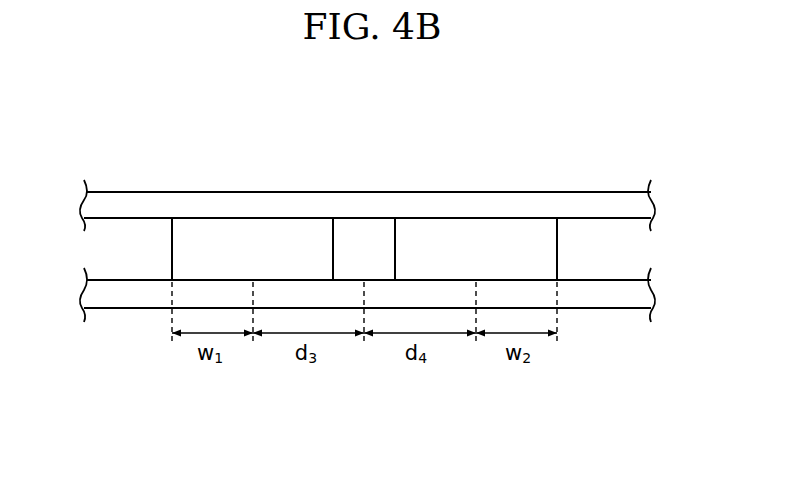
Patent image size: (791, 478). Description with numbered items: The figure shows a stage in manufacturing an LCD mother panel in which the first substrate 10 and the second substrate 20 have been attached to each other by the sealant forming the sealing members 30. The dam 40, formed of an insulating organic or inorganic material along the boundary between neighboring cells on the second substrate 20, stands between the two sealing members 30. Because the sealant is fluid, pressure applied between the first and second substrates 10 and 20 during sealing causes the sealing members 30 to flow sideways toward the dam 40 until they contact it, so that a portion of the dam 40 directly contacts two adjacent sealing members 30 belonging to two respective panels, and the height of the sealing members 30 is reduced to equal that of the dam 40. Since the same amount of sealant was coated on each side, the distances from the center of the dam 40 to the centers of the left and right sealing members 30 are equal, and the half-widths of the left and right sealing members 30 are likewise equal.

The first substrate 10 is at (637, 296).
The second substrate 20 is at (637, 206).
The sealing member 30 is at (253, 240).
The dam 40 is at (367, 240).